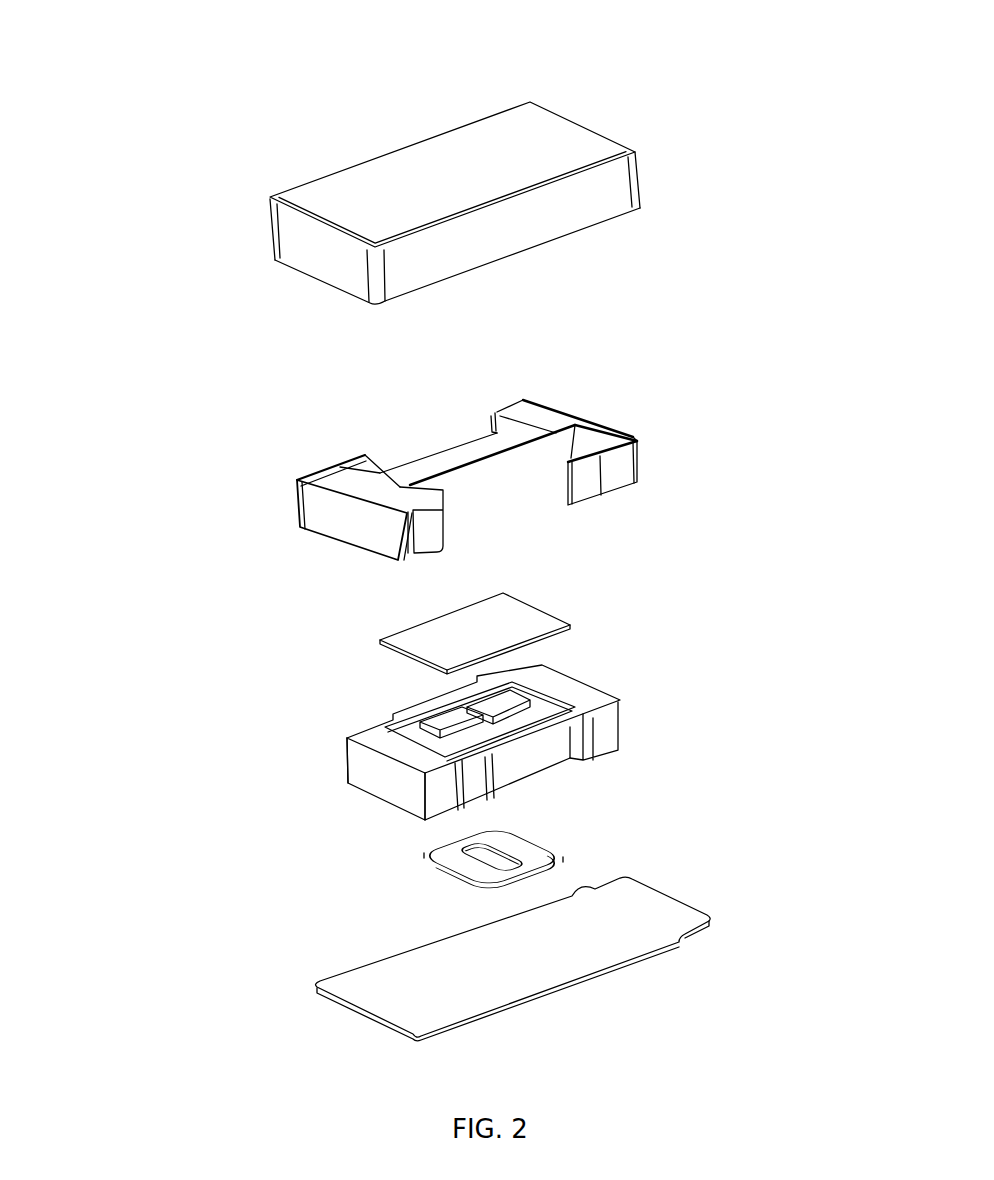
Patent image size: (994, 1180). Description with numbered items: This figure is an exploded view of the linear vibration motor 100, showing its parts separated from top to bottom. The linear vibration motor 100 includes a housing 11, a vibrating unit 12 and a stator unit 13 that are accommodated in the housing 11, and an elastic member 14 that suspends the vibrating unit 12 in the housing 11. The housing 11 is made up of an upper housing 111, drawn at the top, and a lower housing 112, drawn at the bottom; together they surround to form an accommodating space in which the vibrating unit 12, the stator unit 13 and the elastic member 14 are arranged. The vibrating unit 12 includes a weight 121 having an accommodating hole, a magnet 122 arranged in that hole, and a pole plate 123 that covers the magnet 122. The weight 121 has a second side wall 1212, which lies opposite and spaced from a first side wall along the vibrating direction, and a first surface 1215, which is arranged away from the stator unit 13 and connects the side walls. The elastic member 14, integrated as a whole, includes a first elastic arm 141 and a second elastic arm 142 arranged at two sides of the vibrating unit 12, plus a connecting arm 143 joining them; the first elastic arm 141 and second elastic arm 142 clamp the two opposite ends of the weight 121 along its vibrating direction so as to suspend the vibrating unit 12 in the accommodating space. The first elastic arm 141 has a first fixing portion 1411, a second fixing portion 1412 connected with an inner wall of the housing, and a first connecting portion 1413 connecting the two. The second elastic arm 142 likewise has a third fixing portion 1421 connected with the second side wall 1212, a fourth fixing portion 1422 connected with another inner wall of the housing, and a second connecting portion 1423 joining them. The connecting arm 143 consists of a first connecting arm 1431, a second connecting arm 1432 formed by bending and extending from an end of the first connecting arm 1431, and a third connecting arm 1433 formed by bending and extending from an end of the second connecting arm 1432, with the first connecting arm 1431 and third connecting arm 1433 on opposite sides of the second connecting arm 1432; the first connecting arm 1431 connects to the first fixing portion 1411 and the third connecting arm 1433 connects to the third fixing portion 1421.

The linear vibration motor 100 is at (502, 44).
The housing 11 is at (124, 990).
The upper housing 111 is at (320, 250).
The lower housing 112 is at (395, 997).
The vibrating unit 12 is at (820, 686).
The weight 121 is at (512, 717).
The magnet 122 is at (578, 757).
The pole plate 123 is at (493, 622).
The first surface 1215 is at (392, 742).
The second side wall 1212 is at (445, 790).
The stator unit 13 is at (537, 855).
The elastic member 14 is at (816, 590).
The first elastic arm 141 is at (757, 357).
The first fixing portion 1411 is at (490, 428).
The second fixing portion 1412 is at (590, 472).
The first connecting portion 1413 is at (590, 428).
The second elastic arm 142 is at (757, 255).
The third fixing portion 1421 is at (402, 503).
The fourth fixing portion 1422 is at (341, 517).
The second connecting portion 1423 is at (400, 500).
The connecting arm 143 is at (757, 542).
The first connecting arm 1431 is at (525, 413).
The second connecting arm 1432 is at (508, 493).
The third connecting arm 1433 is at (467, 460).